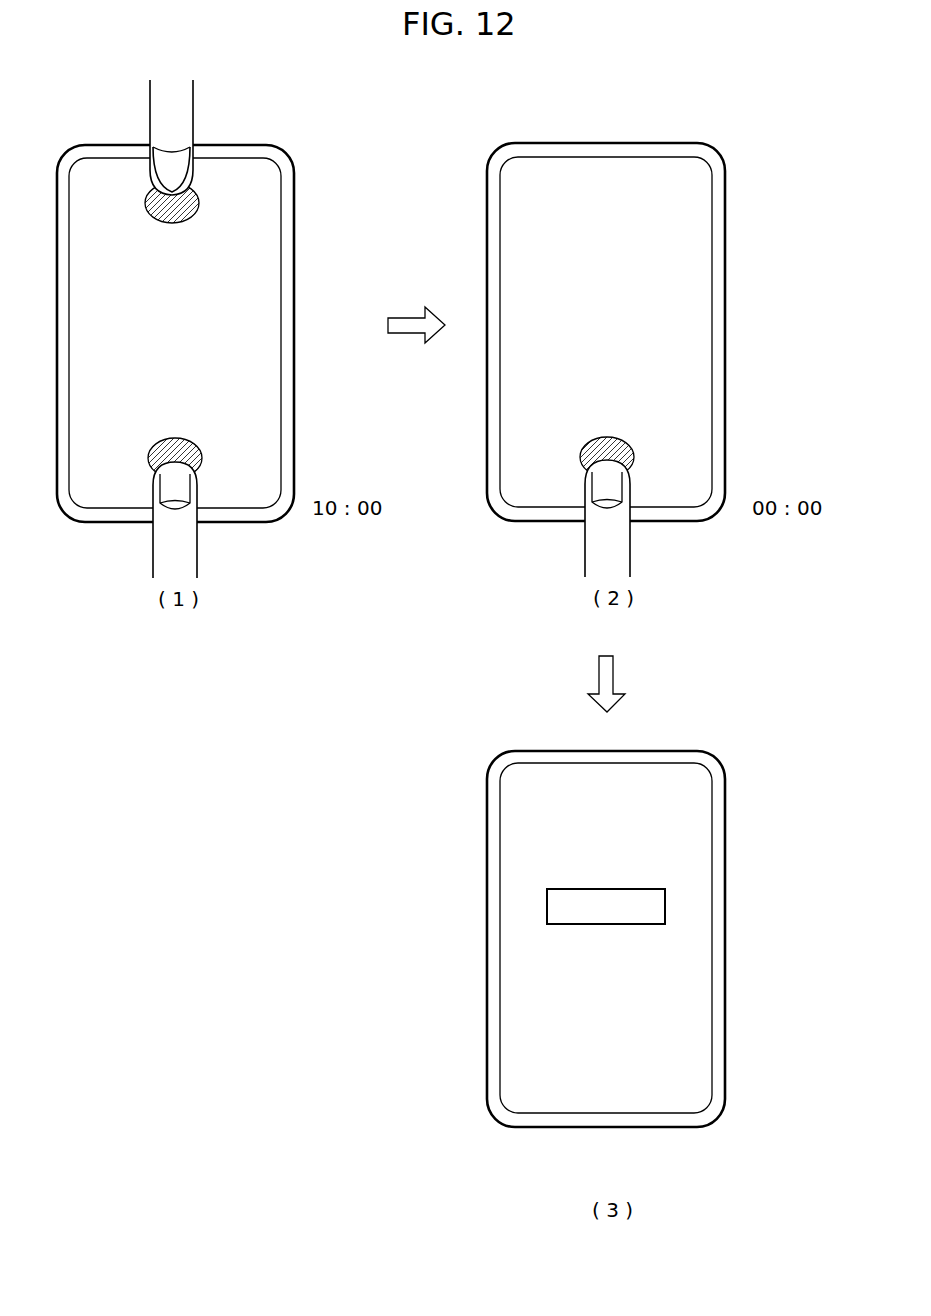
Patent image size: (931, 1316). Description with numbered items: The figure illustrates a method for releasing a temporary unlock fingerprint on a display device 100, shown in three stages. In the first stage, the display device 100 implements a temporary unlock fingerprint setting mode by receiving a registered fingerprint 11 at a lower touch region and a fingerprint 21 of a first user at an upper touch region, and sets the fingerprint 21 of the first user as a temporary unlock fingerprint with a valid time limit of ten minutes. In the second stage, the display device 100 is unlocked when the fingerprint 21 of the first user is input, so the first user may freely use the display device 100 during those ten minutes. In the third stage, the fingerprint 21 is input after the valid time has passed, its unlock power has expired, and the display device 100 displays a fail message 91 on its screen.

The display device 100 is at (294, 316).
The fingerprint of the first user 21 is at (199, 202).
The registered fingerprint 11 is at (203, 460).
The fail message 91 is at (665, 903).